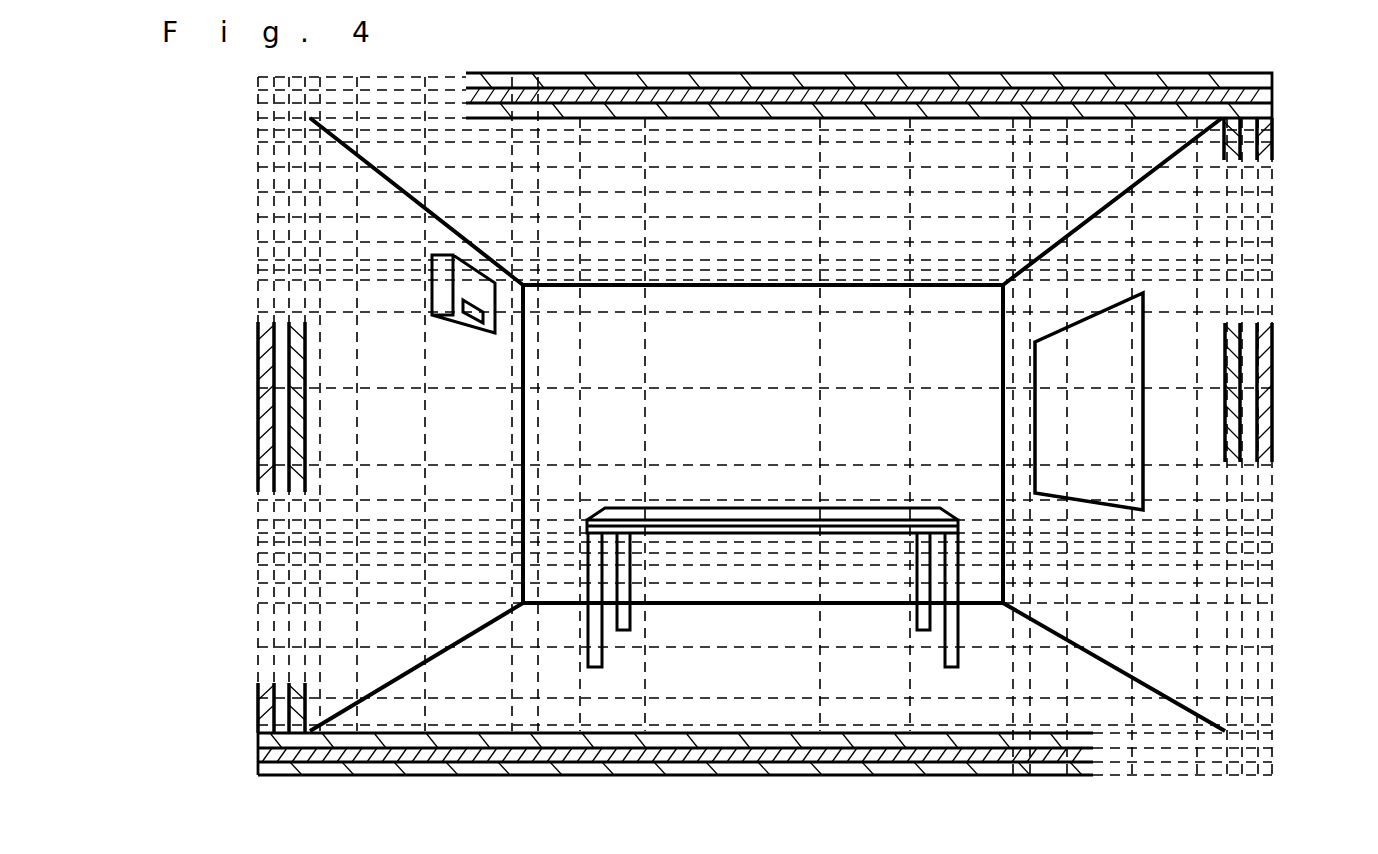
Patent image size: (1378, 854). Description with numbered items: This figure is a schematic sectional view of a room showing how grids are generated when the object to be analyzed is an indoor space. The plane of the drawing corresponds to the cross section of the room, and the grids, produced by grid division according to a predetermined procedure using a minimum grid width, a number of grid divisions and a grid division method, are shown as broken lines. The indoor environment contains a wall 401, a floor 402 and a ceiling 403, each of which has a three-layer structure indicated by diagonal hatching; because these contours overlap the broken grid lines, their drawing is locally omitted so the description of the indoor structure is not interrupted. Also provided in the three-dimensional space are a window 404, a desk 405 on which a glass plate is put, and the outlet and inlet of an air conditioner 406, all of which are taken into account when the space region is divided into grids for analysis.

The wall 401 is at (437, 428).
The floor 402 is at (1083, 778).
The ceiling 403 is at (1280, 73).
The window 404 is at (1145, 365).
The desk 405 is at (750, 507).
The outlet and inlet of an air conditioner 406 is at (495, 322).